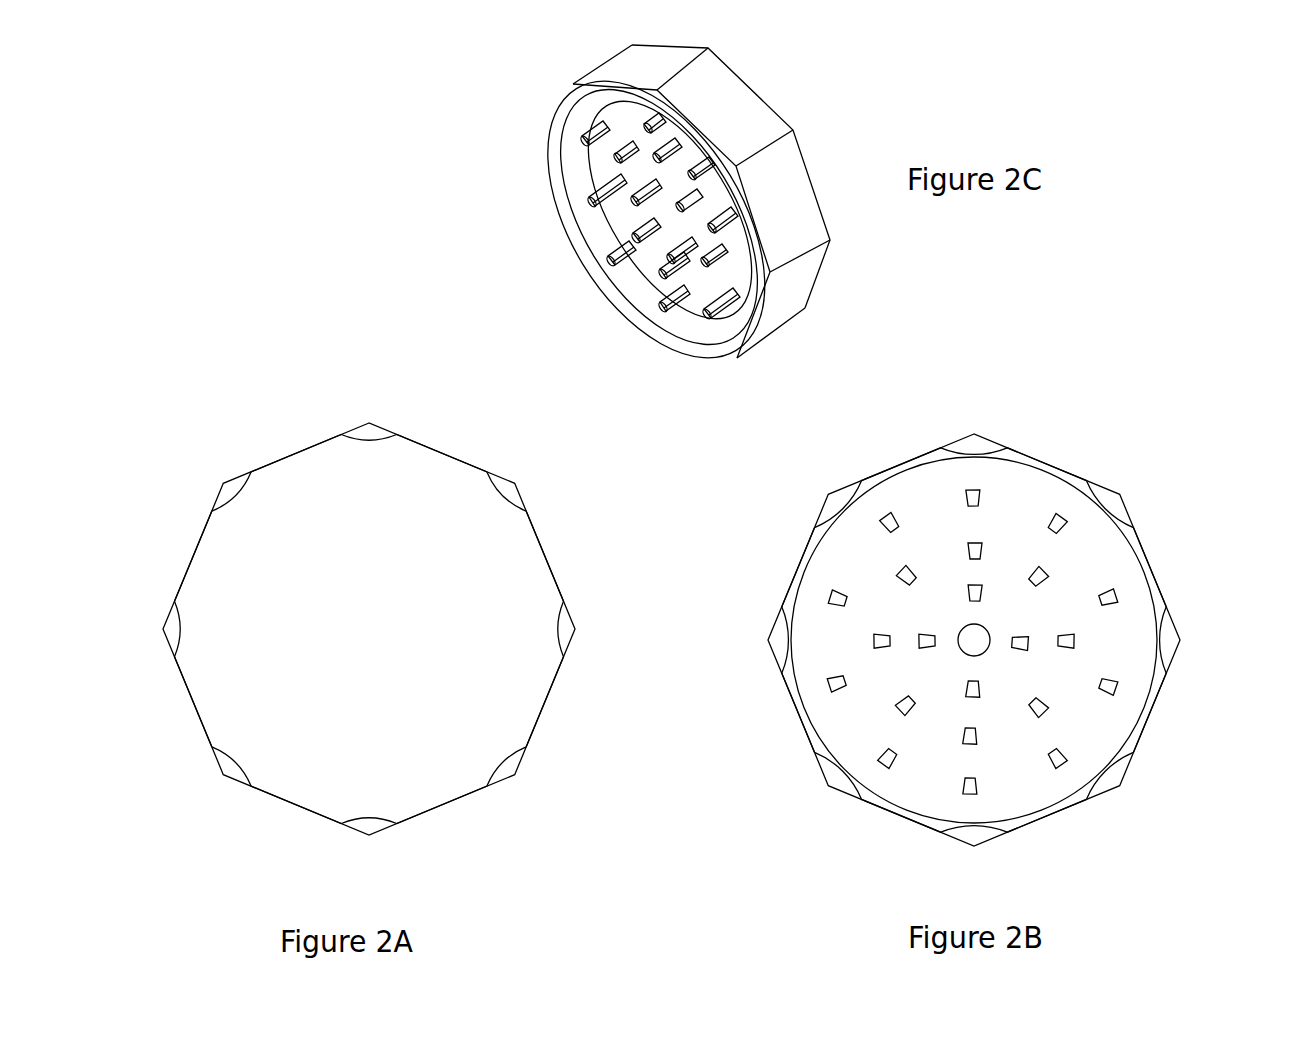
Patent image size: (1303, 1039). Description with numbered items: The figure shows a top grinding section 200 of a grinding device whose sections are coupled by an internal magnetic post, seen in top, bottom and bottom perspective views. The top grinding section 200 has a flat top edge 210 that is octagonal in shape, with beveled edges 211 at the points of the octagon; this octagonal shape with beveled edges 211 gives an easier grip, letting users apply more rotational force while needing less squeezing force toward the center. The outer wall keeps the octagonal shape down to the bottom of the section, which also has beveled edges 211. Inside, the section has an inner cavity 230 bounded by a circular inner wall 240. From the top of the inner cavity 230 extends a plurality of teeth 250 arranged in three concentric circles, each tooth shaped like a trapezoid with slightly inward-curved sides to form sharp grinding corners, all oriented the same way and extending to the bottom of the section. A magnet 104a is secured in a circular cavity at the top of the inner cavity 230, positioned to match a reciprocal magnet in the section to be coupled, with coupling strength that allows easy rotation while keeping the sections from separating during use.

In FIG. 2C, the top grinding section 200 is at (270, 128).
In FIG. 2A, the top edge 210 is at (288, 614).
In FIG. 2A, the beveled edges 211 is at (239, 440).
In FIG. 2B, the beveled edges 211 is at (1006, 417).
In FIG. 2C, the beveled edges 211 is at (562, 99).
In FIG. 2B, the inner cavity 230 is at (861, 568).
In FIG. 2C, the inner cavity 230 is at (621, 231).
In FIG. 2B, the circular inner wall 240 is at (792, 716).
In FIG. 2B, the plurality of teeth 250 is at (1057, 721).
In FIG. 2B, the magnet 104a is at (965, 624).
In FIG. 2C, the magnet 104a is at (698, 219).